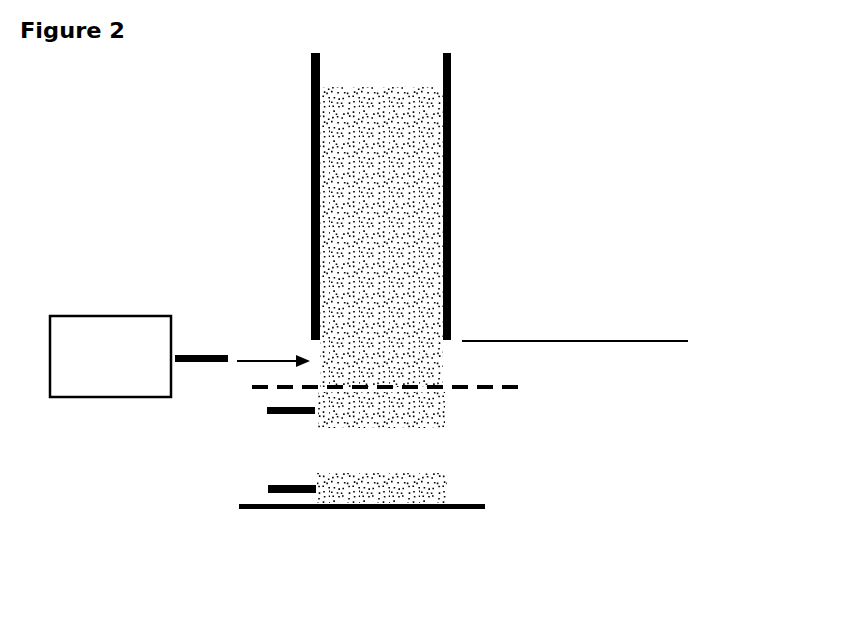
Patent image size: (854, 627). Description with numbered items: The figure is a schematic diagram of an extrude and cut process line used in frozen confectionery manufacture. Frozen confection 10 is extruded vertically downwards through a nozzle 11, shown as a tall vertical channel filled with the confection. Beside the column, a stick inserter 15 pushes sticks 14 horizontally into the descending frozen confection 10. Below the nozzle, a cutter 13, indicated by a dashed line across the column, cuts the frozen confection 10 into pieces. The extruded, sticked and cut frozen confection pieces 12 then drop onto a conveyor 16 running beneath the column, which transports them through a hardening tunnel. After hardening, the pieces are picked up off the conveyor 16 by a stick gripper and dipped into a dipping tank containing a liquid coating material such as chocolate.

The frozen confection 10 is at (409, 197).
The nozzle 11 is at (596, 337).
The frozen confection pieces 12 is at (455, 484).
The cutter 13 is at (514, 397).
The sticks 14 is at (196, 365).
The stick inserter 15 is at (117, 342).
The conveyor 16 is at (360, 511).